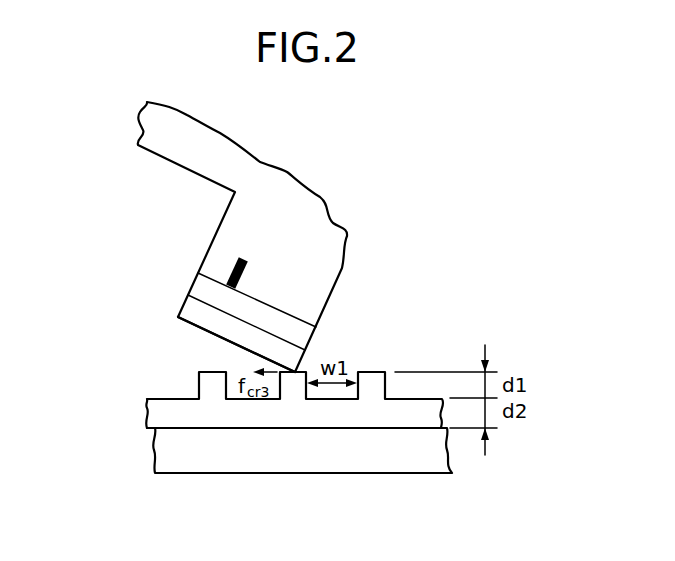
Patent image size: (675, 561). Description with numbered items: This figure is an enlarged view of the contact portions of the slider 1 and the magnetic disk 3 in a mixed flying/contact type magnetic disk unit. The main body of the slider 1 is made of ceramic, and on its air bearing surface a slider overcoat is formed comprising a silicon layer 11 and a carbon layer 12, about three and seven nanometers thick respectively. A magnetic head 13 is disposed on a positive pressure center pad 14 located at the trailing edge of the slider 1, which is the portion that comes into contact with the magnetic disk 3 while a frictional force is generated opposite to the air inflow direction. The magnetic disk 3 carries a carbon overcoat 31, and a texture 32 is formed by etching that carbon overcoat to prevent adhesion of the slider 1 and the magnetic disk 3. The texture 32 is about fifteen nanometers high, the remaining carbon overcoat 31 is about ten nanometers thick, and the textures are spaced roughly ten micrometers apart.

The slider 1 is at (378, 217).
The magnetic disk 3 is at (254, 438).
The silicon layer 11 is at (208, 290).
The carbon layer 12 is at (197, 312).
The magnetic head 13 is at (227, 280).
The positive pressure center pad 14 is at (172, 320).
The carbon overcoat 31 is at (168, 408).
The texture 32 is at (210, 395).